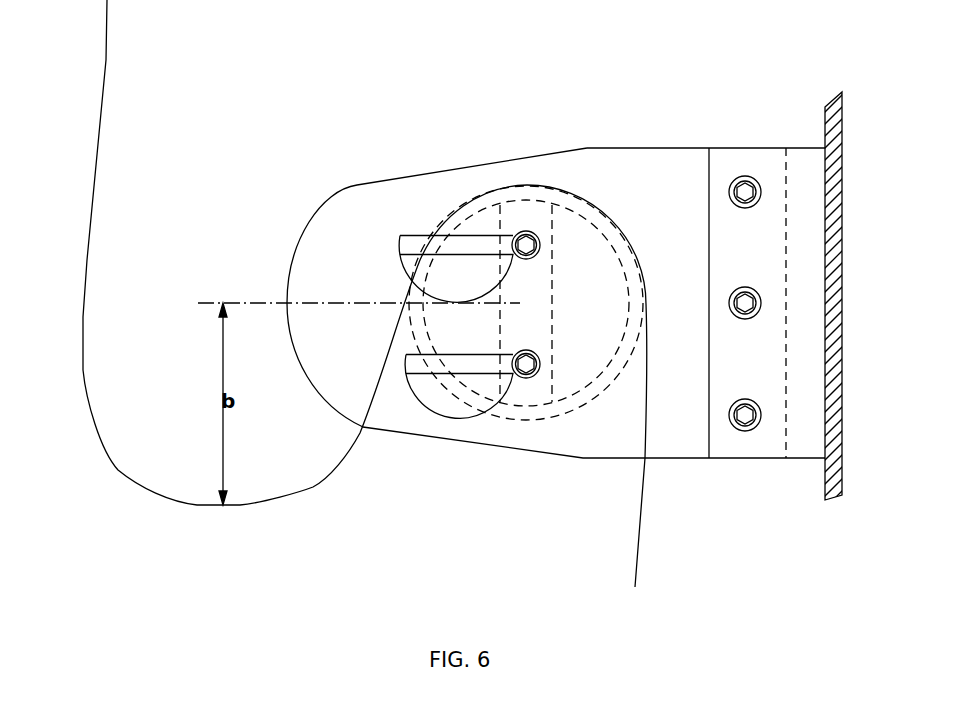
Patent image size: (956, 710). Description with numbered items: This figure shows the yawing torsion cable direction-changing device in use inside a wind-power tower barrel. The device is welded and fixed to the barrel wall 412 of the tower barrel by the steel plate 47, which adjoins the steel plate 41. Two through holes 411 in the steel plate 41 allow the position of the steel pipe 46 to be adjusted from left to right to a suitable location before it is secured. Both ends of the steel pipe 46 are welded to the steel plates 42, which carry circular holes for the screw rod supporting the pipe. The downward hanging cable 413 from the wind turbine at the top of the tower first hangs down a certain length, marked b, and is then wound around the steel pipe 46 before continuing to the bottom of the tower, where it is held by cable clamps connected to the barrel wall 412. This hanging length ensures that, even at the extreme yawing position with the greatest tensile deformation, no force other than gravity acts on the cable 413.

The steel plate 41 is at (587, 148).
The through holes 411 is at (412, 237).
The barrel wall 412 is at (825, 110).
The downward hanging cable 413 is at (107, 60).
The steel plates 42 is at (553, 303).
The position adjustable steel pipe 46 is at (600, 393).
The steel plate 47 is at (709, 228).